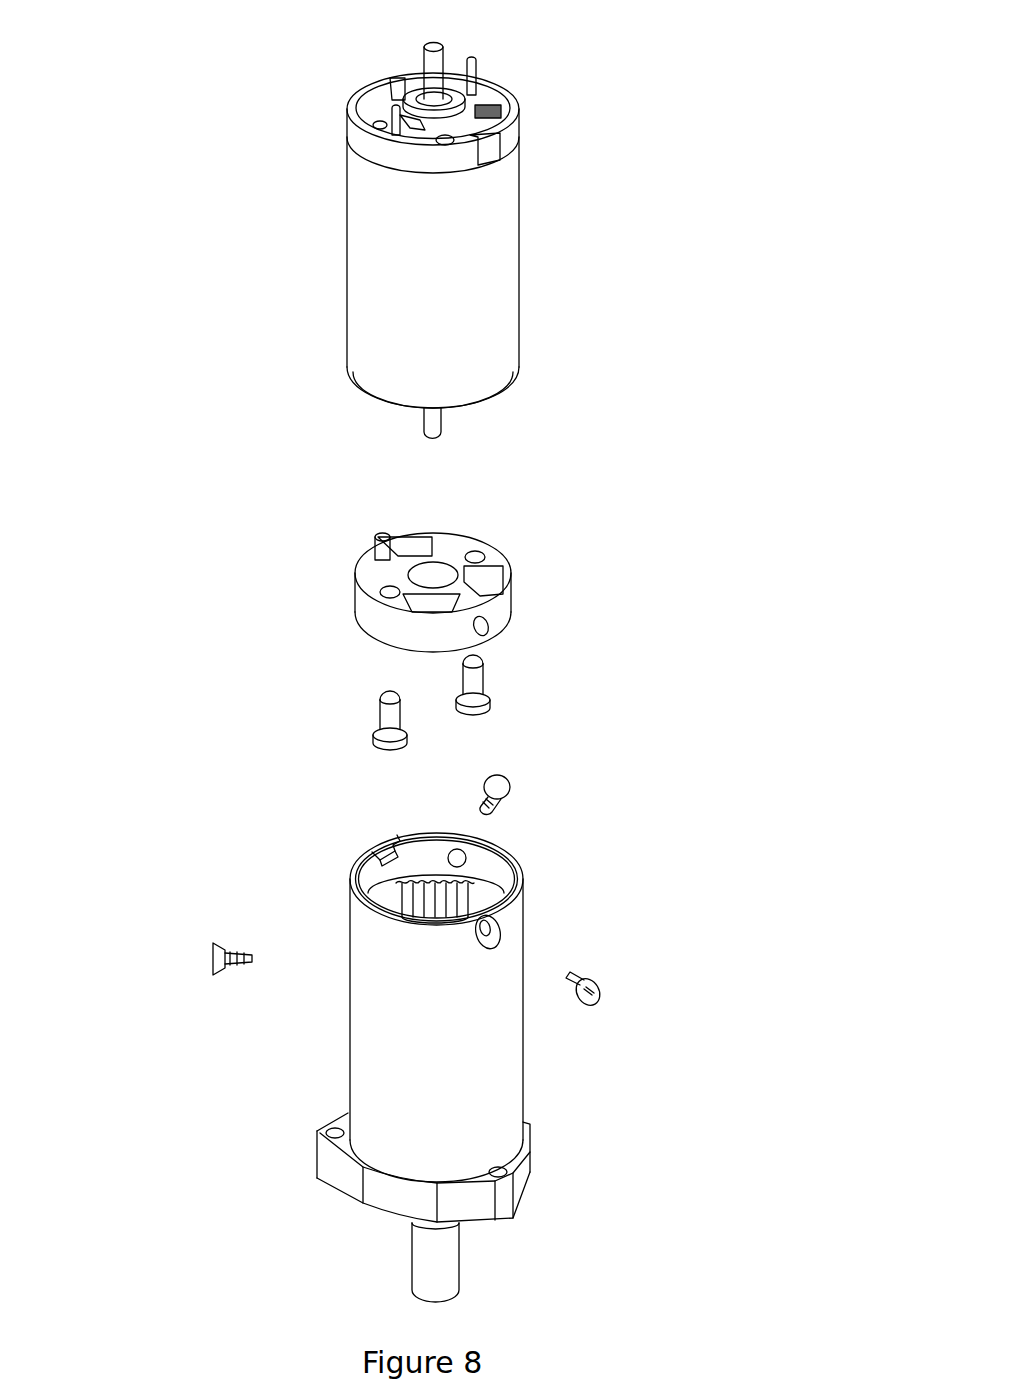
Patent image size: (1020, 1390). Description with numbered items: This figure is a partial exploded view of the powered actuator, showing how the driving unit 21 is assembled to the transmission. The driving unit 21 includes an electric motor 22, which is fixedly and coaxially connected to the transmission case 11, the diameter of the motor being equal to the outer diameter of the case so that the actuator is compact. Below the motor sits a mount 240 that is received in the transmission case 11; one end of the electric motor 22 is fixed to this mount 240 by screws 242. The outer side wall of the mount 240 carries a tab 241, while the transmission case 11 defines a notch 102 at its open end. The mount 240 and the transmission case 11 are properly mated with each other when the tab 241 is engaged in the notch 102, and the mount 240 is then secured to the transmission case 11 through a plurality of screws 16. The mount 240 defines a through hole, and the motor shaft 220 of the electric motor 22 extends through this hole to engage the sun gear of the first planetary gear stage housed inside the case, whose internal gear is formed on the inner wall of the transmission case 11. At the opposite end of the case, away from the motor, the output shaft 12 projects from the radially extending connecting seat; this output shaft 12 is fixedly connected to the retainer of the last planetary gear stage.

The driving unit 21 is at (261, 424).
The electric motor 22 is at (533, 250).
The motor shaft 220 is at (425, 50).
The mount 240 is at (520, 587).
The tab 241 is at (390, 540).
The screws 242 is at (379, 709).
The screws 16 is at (510, 785).
The transmission case 11 is at (525, 920).
The notch 102 is at (385, 850).
The output shaft 12 is at (445, 1272).